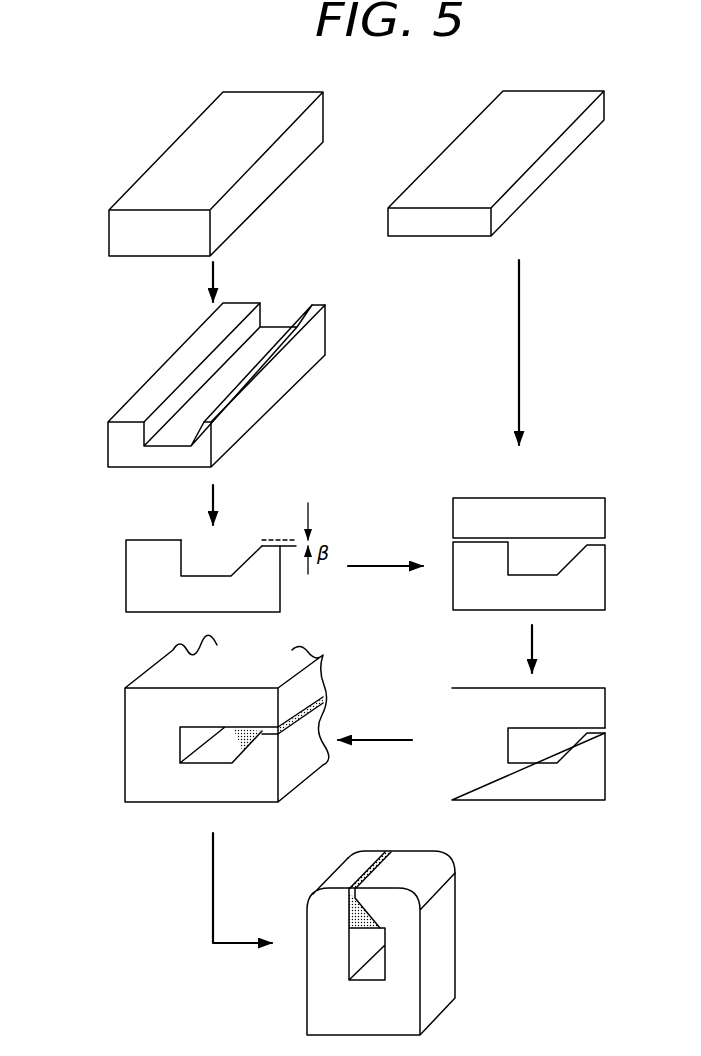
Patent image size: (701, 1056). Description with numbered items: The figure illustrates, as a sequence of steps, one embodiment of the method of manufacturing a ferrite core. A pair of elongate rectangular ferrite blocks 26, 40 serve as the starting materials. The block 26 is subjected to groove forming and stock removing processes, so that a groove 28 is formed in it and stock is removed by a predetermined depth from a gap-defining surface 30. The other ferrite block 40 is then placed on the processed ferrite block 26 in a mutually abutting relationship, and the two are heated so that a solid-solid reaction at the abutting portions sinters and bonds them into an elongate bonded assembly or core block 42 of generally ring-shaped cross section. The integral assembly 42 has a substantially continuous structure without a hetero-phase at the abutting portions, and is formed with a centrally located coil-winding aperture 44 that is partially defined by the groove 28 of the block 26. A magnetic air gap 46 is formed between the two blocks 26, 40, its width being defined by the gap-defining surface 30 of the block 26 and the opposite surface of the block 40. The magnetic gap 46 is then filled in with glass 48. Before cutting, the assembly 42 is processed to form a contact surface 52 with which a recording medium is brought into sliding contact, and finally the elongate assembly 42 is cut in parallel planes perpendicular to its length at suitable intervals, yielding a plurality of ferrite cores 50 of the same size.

The ferrite block 26 is at (145, 155).
The groove 28 is at (220, 378).
The gap-defining surface 30 is at (312, 305).
The ferrite block 40 is at (565, 177).
The bonded assembly 42 is at (112, 741).
The coil-winding aperture 44 is at (208, 753).
The magnetic gap 46 is at (331, 695).
The glass 48 is at (246, 728).
The ferrite core 50 is at (465, 973).
The contact surface 52 is at (412, 863).